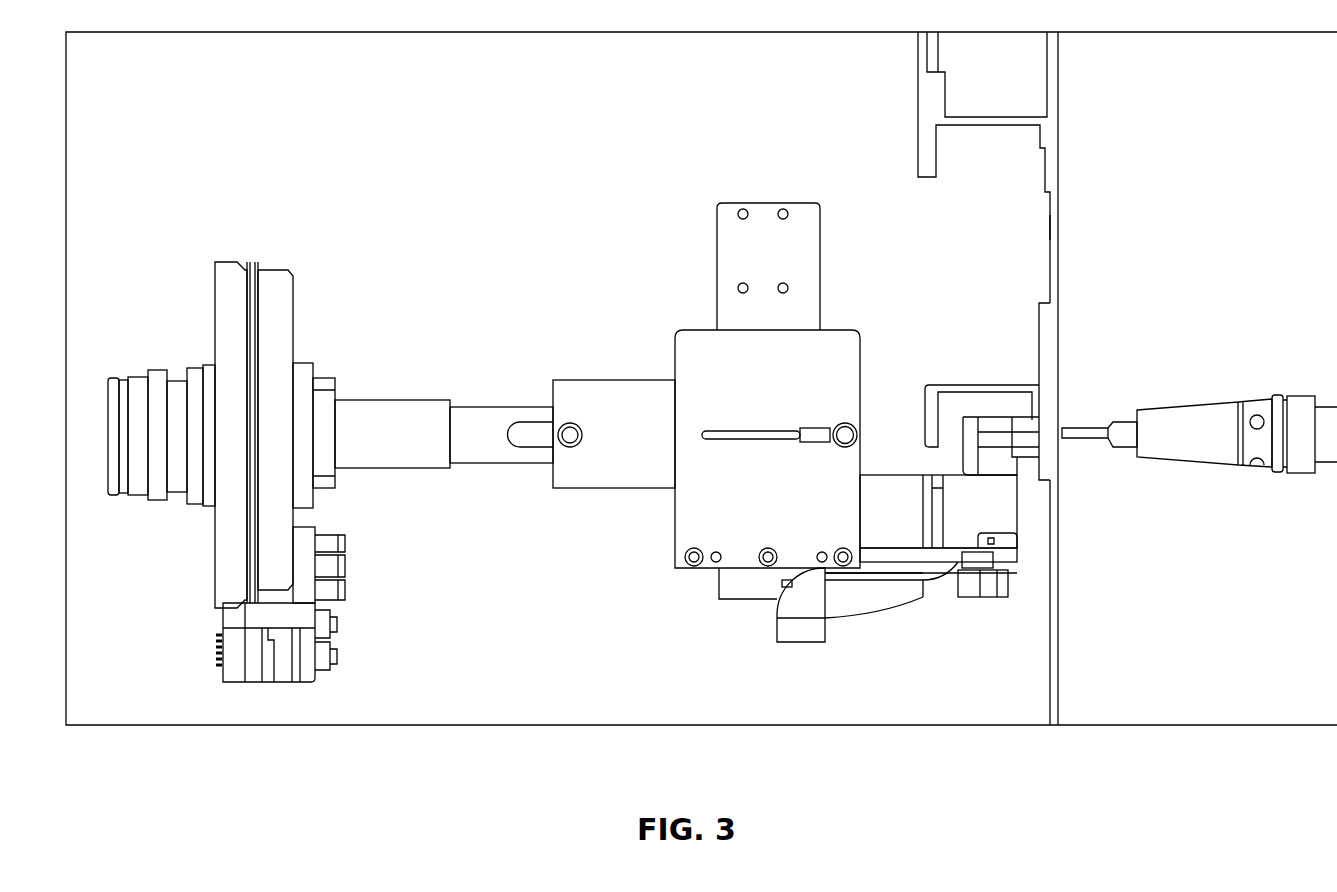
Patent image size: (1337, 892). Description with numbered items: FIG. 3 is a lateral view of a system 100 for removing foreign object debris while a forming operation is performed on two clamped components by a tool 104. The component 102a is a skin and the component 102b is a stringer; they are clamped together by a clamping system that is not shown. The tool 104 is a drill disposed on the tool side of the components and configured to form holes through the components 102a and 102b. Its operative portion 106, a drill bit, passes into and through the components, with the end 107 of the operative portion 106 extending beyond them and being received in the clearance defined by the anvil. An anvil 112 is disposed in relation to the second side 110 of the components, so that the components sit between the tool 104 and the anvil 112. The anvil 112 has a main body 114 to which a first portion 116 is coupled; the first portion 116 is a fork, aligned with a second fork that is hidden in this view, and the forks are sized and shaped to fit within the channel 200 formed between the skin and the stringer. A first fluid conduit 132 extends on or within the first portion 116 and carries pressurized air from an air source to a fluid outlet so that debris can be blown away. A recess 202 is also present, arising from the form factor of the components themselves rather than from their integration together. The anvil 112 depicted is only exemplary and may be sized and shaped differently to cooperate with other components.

The system 100 is at (775, 672).
The component 102a is at (1060, 245).
The component 102b is at (1012, 383).
The tool 104 is at (1263, 385).
The operative portion 106 is at (1085, 442).
The end 107 is at (1068, 425).
The second side 110 is at (1002, 307).
The anvil 112 is at (572, 338).
The main body 114 is at (682, 314).
The first portion 116 is at (1005, 432).
The first fluid conduit 132 is at (827, 640).
The channel 200 is at (951, 426).
The recess 202 is at (1038, 228).